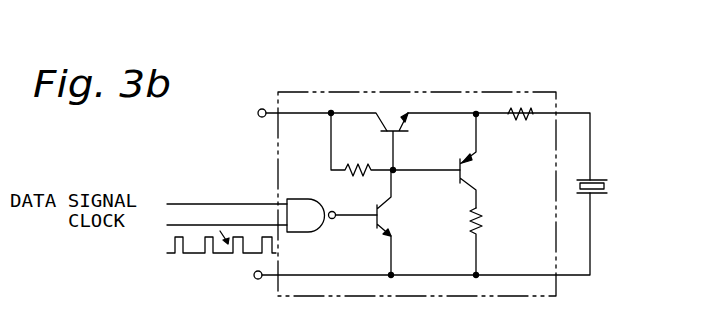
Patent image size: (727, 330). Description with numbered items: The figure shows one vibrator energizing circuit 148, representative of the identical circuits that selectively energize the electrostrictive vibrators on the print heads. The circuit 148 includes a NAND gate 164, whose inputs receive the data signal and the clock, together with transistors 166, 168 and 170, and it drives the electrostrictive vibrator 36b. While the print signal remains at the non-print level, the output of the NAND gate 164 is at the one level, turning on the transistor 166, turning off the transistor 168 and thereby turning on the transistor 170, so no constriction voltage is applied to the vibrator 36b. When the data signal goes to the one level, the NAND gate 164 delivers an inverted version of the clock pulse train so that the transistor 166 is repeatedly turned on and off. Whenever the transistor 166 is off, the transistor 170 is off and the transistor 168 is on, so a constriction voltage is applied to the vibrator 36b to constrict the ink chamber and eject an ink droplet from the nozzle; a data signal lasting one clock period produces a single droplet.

The vibrator energizing circuit 148 is at (350, 92).
The NAND gate 164 is at (316, 233).
The transistor 166 is at (391, 218).
The transistor 168 is at (408, 120).
The transistor 170 is at (471, 177).
The electrostrictive vibrator 36b is at (610, 187).